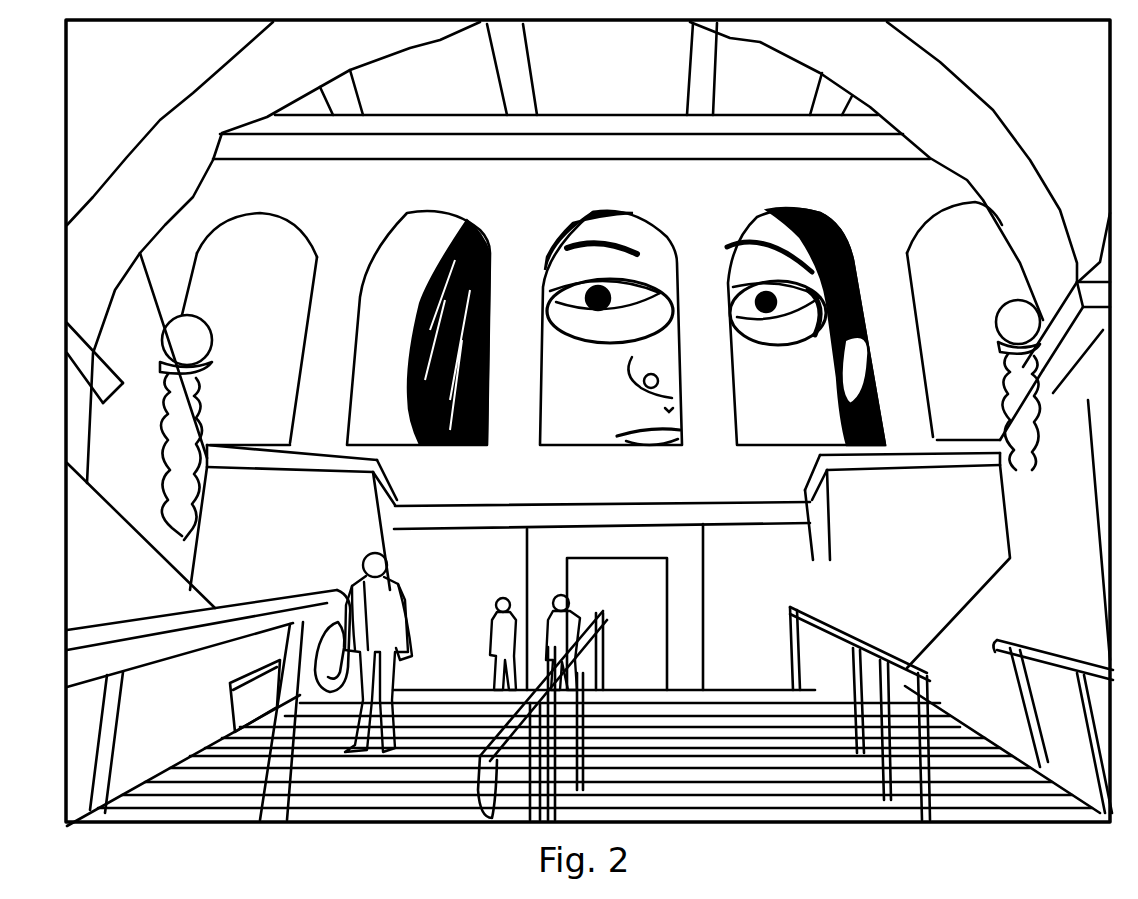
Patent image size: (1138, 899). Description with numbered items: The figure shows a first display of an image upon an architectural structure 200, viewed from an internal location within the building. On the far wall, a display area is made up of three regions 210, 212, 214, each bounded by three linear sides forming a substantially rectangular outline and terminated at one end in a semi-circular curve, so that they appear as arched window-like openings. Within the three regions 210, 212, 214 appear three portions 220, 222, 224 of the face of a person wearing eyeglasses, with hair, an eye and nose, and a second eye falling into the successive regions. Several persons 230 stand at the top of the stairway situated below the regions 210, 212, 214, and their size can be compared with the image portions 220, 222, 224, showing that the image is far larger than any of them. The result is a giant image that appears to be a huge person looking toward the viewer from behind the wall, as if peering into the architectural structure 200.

The architectural structure 200 is at (632, 73).
The display region 210 is at (421, 209).
The display region 212 is at (602, 208).
The display region 214 is at (782, 204).
The image portion 220 is at (429, 332).
The image portion 222 is at (612, 328).
The image portion 224 is at (806, 326).
The persons 230 is at (402, 582).